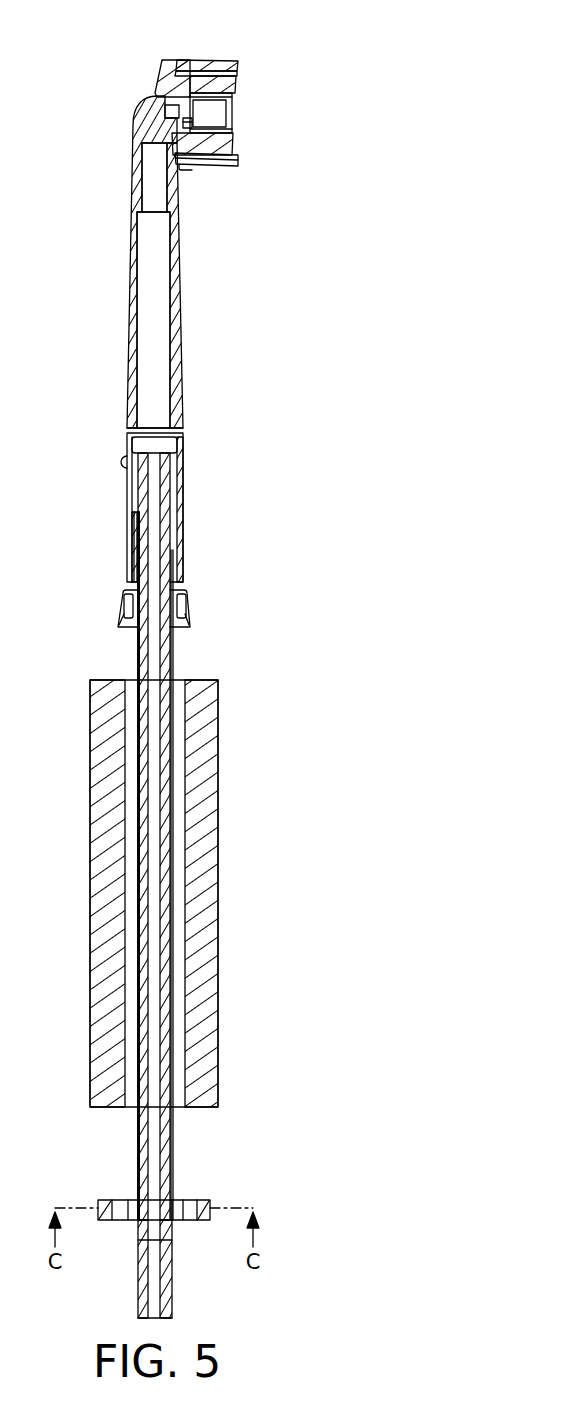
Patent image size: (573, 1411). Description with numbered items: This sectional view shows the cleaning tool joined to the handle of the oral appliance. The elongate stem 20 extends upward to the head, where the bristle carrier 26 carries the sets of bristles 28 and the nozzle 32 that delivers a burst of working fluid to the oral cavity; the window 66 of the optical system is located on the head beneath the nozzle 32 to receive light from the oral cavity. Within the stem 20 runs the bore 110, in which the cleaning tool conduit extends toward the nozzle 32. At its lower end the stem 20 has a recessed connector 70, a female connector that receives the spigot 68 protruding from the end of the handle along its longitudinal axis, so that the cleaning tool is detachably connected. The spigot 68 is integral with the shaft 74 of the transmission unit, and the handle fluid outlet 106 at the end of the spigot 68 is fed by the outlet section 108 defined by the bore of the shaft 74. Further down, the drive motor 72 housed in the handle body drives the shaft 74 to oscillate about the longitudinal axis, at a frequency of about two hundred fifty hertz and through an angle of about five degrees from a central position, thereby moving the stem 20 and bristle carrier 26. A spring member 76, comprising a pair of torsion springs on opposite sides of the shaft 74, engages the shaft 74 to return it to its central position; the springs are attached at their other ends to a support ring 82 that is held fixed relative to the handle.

The stem 20 is at (183, 370).
The bristle carrier 26 is at (168, 62).
The bristles 28 is at (217, 63).
The nozzle 32 is at (170, 116).
The window 66 is at (227, 123).
The spigot 68 is at (166, 500).
The recessed connector 70 is at (172, 443).
The drive motor 72 is at (210, 877).
The shaft 74 is at (170, 647).
The spring member 76 is at (226, 1190).
The support ring 82 is at (203, 1221).
The handle fluid outlet 106 is at (153, 452).
The outlet section 108 is at (155, 1140).
The bore 110 is at (145, 268).